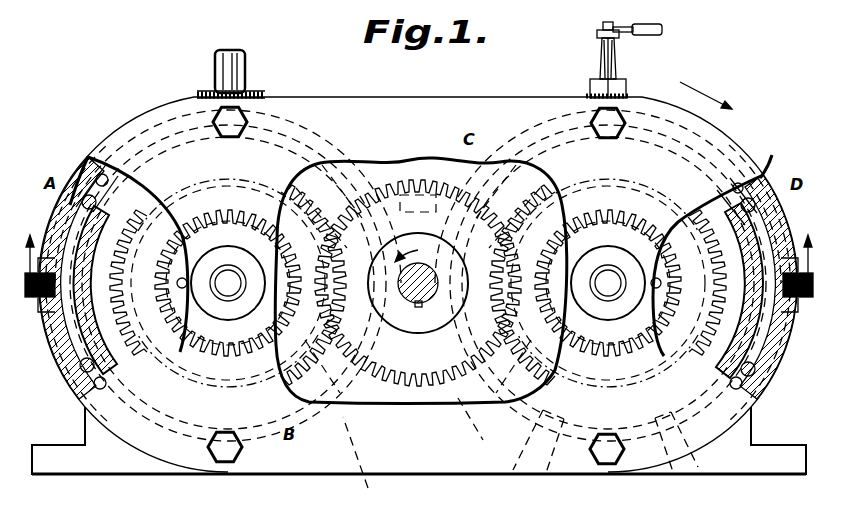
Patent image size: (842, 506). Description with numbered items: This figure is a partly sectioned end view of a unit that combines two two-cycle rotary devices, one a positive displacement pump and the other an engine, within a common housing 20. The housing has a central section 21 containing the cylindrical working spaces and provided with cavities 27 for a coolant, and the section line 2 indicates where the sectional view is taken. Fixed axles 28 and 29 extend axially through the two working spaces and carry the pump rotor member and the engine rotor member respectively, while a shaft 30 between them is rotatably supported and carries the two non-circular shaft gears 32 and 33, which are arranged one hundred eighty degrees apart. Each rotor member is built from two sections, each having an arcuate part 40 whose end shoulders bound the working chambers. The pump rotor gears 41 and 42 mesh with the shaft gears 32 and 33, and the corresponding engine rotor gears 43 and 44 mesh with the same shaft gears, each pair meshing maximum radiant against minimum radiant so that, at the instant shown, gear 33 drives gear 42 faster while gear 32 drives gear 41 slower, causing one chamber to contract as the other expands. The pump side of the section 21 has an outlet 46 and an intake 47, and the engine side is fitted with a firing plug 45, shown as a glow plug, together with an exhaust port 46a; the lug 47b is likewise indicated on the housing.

The section line 2- 2 is at (419, 254).
The housing 20 is at (150, 83).
The central section 21 is at (68, 380).
The cavities 27 is at (80, 350).
The axle 28 is at (229, 275).
The axle 29 is at (609, 275).
The shaft 30 is at (421, 285).
The shaft gear 32 is at (432, 352).
The shaft gear 33 is at (392, 163).
The arcuate part 40 is at (190, 135).
The gear 41 is at (175, 332).
The gear 42 is at (88, 157).
The gear 43 is at (772, 155).
The gear 44 is at (458, 398).
The firing plug 45 is at (618, 68).
The outlet 46 is at (245, 50).
The exhaust port 46a is at (688, 474).
The intake 47 is at (362, 461).
The lug 47b is at (525, 485).